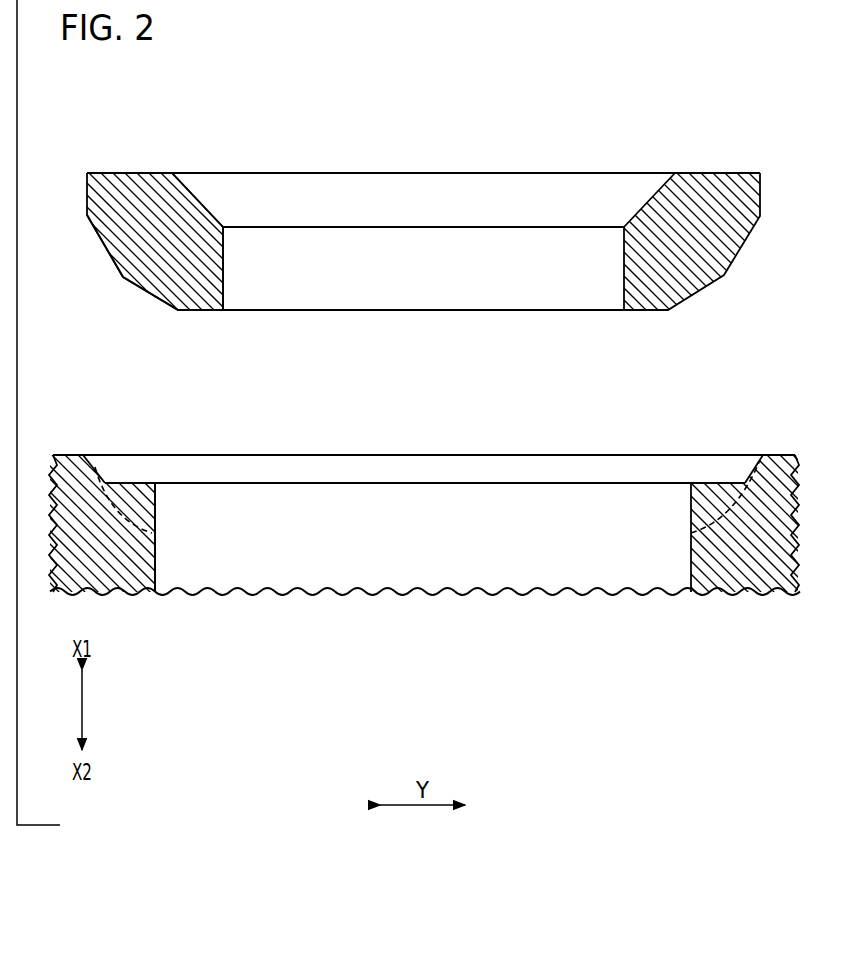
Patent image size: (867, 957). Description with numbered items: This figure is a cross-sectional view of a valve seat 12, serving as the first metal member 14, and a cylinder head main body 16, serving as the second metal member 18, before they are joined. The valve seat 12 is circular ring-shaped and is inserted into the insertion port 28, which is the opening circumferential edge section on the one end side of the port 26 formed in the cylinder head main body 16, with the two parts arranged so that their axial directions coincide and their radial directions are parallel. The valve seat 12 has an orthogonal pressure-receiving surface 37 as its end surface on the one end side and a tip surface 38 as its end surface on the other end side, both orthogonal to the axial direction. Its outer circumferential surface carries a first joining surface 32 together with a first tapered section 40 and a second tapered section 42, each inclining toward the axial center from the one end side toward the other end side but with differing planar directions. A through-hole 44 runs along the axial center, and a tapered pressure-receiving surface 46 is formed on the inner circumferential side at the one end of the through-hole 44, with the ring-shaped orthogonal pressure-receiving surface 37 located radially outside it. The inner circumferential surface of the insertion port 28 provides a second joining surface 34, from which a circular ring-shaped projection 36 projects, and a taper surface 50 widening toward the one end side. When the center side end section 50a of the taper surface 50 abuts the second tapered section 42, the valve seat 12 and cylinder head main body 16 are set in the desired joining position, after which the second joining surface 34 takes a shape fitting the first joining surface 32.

The valve seat 12 is at (433, 242).
The first metal member 14 is at (423, 242).
The cylinder head main body 16 is at (433, 524).
The second metal member 18 is at (424, 525).
The port 26 is at (690, 575).
The insertion port 28 is at (609, 465).
The first joining surface 32 is at (112, 303).
The second joining surface 34 is at (157, 518).
The projection 36 is at (150, 497).
The orthogonal pressure-receiving surface 37 is at (136, 173).
The tip surface 38 is at (202, 311).
The first tapered section 40 is at (152, 296).
The second tapered section 42 is at (105, 247).
The through-hole 44 is at (224, 280).
The tapered pressure-receiving surface 46 is at (190, 192).
The taper surface 50 is at (105, 482).
The center side end section 50a is at (100, 470).